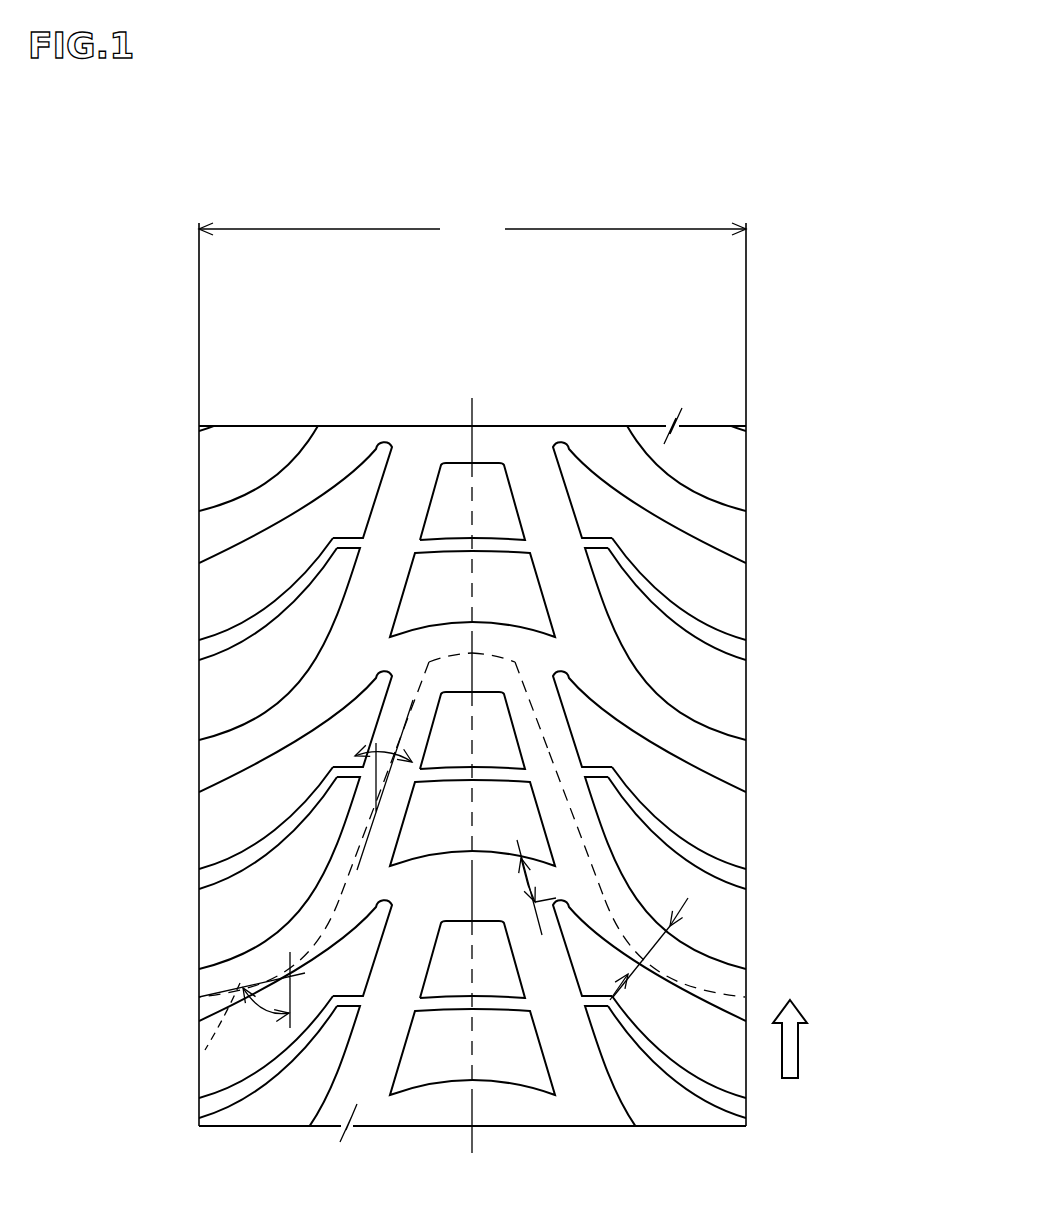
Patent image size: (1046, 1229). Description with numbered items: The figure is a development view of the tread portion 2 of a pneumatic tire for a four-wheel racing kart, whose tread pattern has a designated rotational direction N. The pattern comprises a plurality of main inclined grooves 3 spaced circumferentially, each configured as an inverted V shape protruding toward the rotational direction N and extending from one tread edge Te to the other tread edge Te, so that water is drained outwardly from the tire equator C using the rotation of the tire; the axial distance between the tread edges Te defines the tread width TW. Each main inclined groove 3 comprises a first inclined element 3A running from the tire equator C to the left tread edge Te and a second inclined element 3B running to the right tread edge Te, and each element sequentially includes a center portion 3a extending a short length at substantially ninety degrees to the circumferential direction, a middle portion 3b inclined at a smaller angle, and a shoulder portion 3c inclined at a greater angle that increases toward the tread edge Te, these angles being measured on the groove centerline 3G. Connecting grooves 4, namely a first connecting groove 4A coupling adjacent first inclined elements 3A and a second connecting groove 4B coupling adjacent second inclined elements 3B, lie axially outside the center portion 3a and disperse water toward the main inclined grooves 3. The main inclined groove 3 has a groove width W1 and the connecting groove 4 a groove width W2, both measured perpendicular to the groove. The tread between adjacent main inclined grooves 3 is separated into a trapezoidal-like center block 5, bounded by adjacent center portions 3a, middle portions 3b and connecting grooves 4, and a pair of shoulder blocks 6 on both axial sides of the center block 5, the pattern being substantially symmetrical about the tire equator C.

The tread portion 2 is at (773, 369).
The main inclined groove 3 is at (470, 705).
The first inclined element 3A is at (407, 481).
The second inclined element 3B is at (705, 705).
The center portion 3a is at (440, 647).
The middle portion 3b is at (362, 819).
The shoulder portion 3c is at (259, 964).
The connecting groove 4 is at (472, 621).
The first connecting groove 4A is at (387, 649).
The second connecting groove 4B is at (558, 649).
The center block 5 is at (443, 1053).
The shoulder block 6 is at (227, 698).
The groove centerline 3G is at (198, 1056).
The tire equator C is at (471, 760).
The tread edge Te is at (747, 466).
The tread width TW is at (472, 230).
The groove width of main inclined groove W1 is at (650, 945).
The groove width of connecting groove W2 is at (528, 886).
The rotational direction N is at (790, 1058).